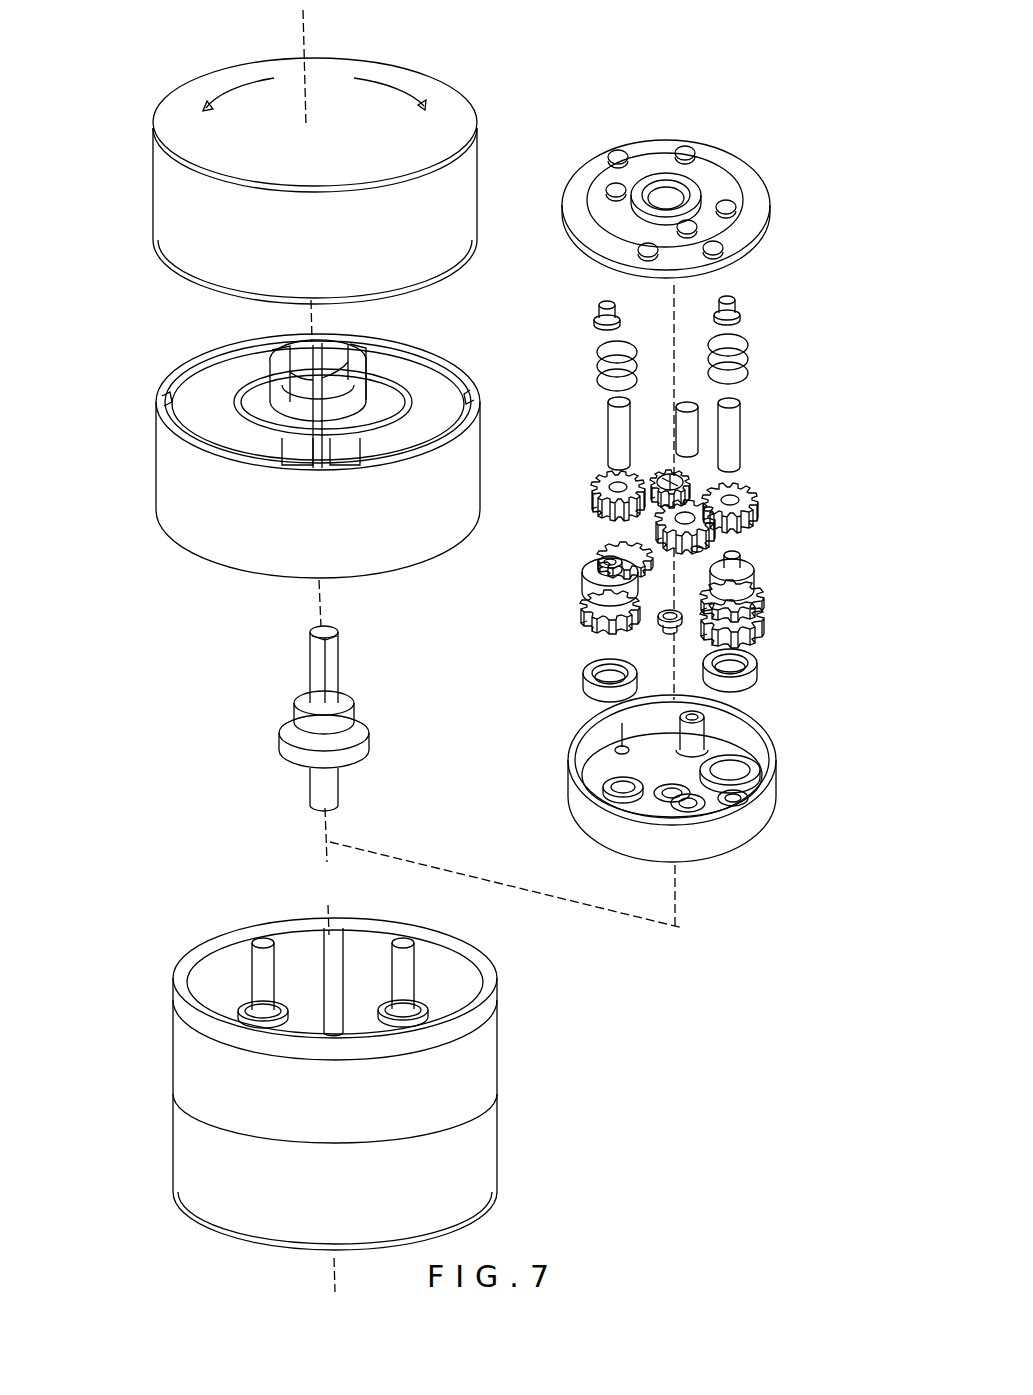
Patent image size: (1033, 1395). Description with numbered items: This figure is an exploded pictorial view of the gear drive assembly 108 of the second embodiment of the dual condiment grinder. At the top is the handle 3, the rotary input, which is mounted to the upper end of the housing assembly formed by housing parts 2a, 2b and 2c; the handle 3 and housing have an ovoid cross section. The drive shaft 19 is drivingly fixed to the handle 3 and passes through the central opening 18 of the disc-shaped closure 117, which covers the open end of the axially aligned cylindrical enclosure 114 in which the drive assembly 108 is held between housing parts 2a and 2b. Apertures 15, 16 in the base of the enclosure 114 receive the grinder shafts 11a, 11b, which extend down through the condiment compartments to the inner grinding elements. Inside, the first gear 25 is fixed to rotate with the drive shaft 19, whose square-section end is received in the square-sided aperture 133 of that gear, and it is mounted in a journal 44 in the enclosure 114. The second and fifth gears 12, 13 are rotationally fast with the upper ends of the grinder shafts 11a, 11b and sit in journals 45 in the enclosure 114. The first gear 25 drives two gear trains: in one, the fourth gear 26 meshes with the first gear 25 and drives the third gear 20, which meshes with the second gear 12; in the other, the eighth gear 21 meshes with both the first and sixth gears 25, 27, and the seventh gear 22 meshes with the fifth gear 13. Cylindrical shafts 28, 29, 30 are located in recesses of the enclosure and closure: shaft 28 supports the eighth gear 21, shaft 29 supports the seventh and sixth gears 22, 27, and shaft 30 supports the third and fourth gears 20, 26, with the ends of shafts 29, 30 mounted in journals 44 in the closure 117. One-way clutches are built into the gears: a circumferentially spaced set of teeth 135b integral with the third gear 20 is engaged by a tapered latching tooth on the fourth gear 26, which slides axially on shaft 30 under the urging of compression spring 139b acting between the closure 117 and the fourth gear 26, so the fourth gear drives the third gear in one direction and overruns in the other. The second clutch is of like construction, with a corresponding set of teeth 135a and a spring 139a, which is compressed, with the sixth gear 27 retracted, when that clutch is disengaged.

The handle 3 is at (114, 243).
The housing part 2a is at (165, 495).
The drive shaft 19 is at (367, 683).
The housing part 2b is at (478, 1046).
The housing part 2c is at (478, 1138).
The grinder shaft 11a is at (262, 977).
The grinder shaft 11b is at (403, 980).
The closure 117 is at (713, 181).
The central opening 18 is at (672, 194).
The journal 44 is at (616, 316).
The spring 139a is at (749, 352).
The compression spring 139b is at (598, 362).
The shaft 30 is at (607, 420).
The shaft 28 is at (682, 404).
The shaft 29 is at (749, 432).
The fourth gear 26 is at (575, 478).
The square-sided aperture 133 is at (693, 486).
The sixth gear 27 is at (765, 491).
The first gear 25 is at (645, 526).
The eighth gear 21 is at (701, 560).
The third gear 20 is at (587, 582).
The first set of teeth 135b is at (613, 553).
The fifth gear 13 is at (577, 623).
The second gear 12 is at (780, 600).
The gear teeth 135a is at (764, 600).
The seventh gear 22 is at (772, 634).
The journal 45 is at (590, 680).
The drive assembly 108 is at (696, 797).
The enclosure 114 is at (674, 797).
The aperture 15 is at (737, 774).
The aperture 16 is at (615, 803).